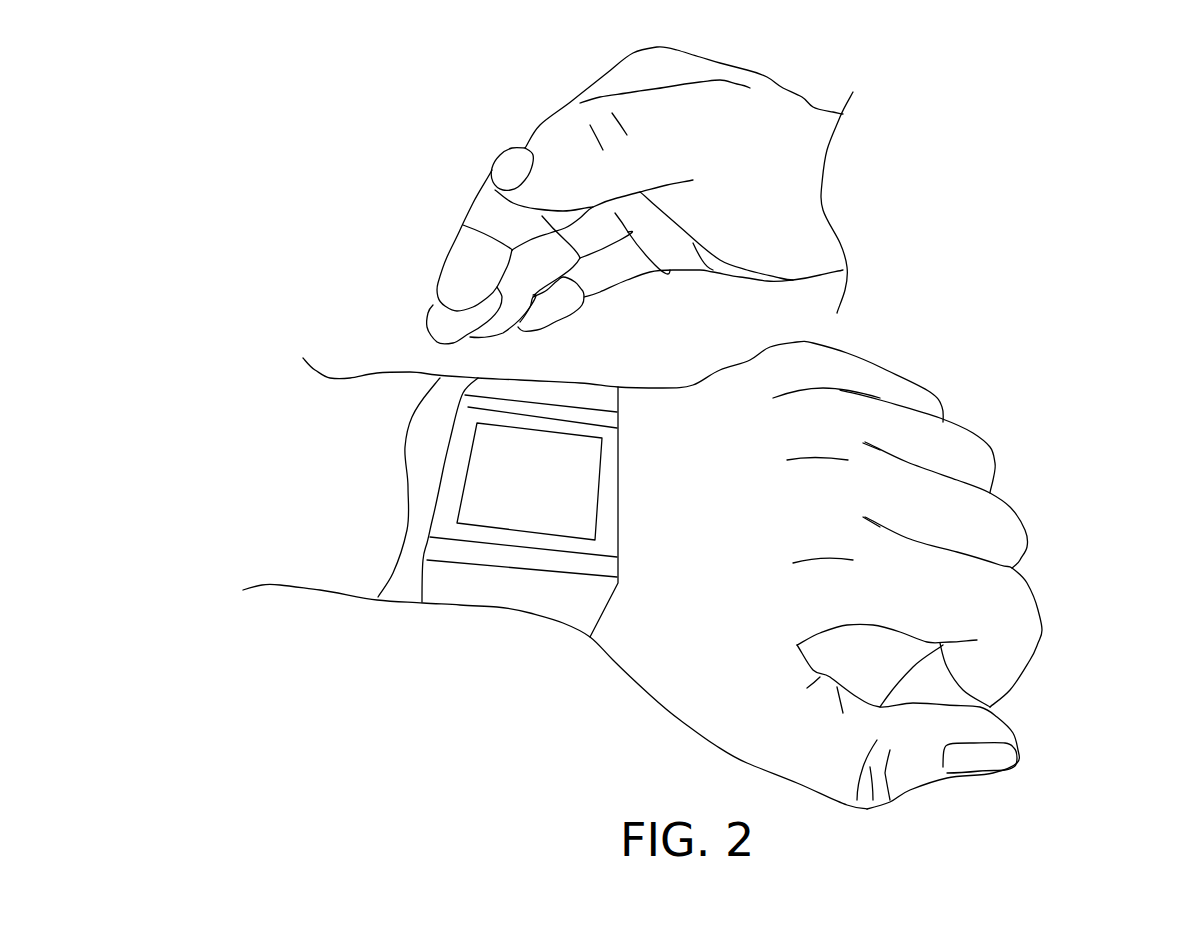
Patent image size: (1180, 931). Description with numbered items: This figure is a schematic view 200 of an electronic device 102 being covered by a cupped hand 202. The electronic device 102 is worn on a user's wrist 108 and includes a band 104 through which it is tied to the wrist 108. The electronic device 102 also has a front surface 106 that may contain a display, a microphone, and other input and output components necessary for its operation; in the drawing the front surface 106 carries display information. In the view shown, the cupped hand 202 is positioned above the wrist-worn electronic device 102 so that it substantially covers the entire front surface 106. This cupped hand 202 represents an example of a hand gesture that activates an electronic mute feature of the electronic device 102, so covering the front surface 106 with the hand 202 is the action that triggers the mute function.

The operating environment 200 is at (1086, 122).
The cupped hand 202 is at (658, 47).
The electronic device 102 is at (562, 378).
The band 104 is at (510, 597).
The front surface 106 is at (458, 495).
The user's wrist 108 is at (425, 447).